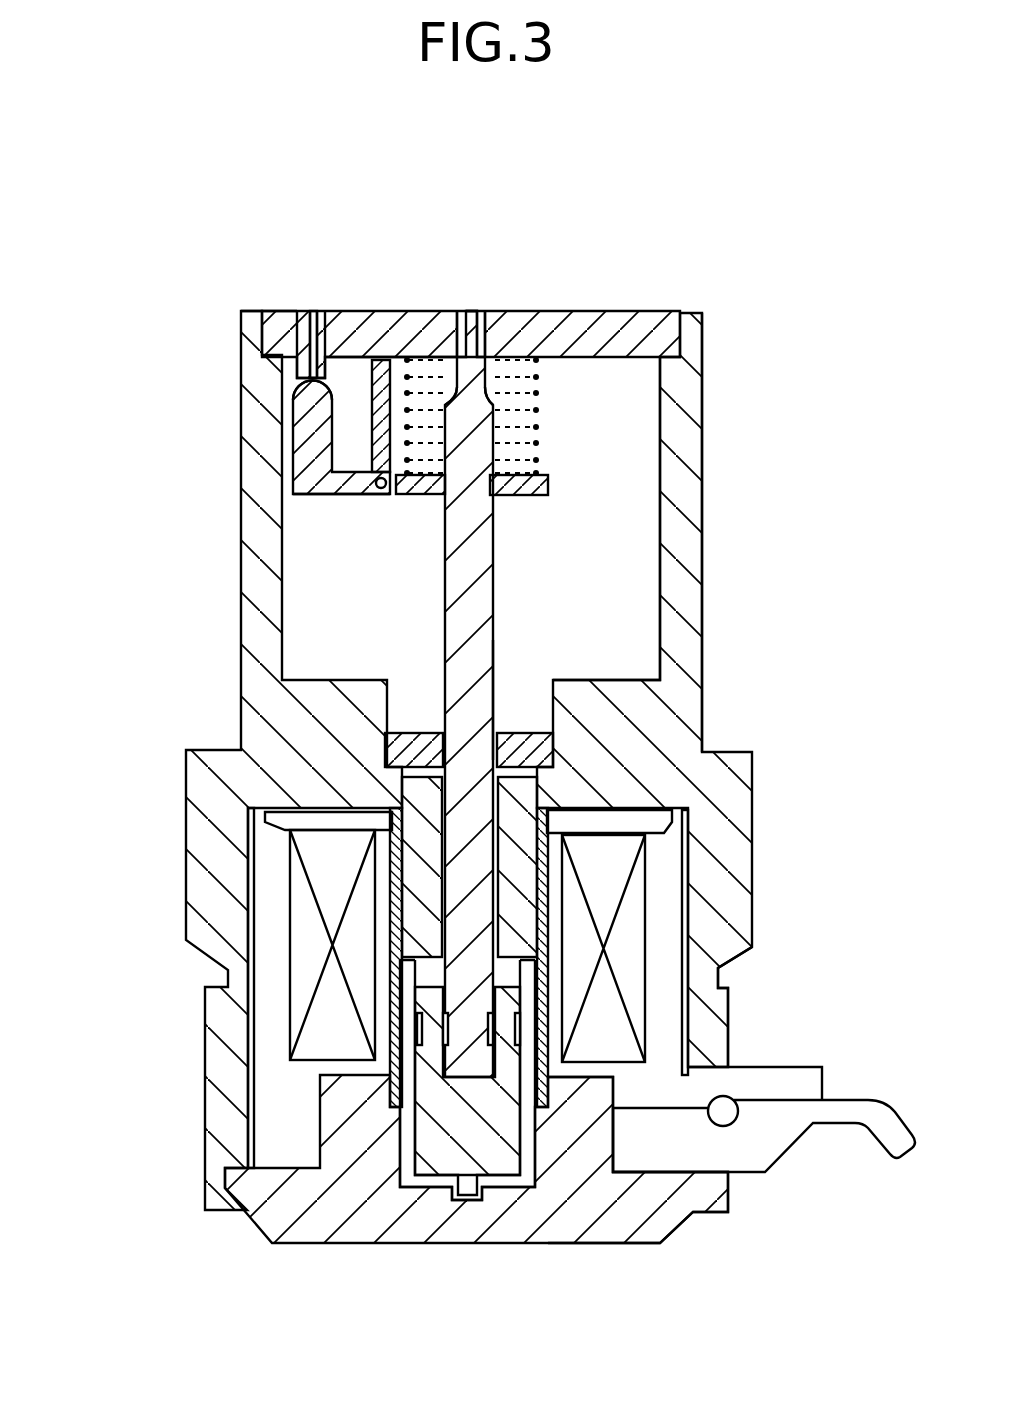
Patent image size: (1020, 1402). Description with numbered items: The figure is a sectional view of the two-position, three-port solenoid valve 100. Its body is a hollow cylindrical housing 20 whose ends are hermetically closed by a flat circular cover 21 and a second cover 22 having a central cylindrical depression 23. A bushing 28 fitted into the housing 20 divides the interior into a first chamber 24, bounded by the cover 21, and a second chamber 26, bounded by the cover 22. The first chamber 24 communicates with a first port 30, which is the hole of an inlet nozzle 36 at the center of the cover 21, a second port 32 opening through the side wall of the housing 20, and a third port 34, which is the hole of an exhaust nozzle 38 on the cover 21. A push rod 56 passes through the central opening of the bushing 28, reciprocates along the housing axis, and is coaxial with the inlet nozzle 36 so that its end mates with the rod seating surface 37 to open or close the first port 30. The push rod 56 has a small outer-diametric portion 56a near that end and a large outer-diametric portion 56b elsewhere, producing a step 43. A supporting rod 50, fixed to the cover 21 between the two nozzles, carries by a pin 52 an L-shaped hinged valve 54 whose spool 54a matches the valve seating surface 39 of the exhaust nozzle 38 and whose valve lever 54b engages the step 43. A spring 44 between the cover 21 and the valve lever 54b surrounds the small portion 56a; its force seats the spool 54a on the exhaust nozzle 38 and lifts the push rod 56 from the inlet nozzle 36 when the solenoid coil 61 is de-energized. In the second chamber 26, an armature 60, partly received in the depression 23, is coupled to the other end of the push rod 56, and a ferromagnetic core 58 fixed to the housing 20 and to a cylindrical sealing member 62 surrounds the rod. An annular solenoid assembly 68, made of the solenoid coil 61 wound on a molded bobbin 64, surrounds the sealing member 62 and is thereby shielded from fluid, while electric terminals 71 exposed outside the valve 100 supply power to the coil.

The 2/3 solenoid valve 100 is at (728, 198).
The housing 20 is at (690, 616).
The cover 21 is at (489, 382).
The cover 22 is at (353, 1197).
The cylindrical depression 23 is at (535, 1157).
The first chamber 24 is at (632, 440).
The second chamber 26 is at (470, 1000).
The bushing 28 is at (400, 748).
The first port 30 is at (469, 322).
The second port 32 is at (690, 562).
The third port 34 is at (314, 330).
The inlet nozzle 36 is at (500, 345).
The rod seating surface 37 is at (432, 345).
The exhaust nozzle 38 is at (298, 335).
The valve seating surface 39 is at (250, 322).
The step 43 is at (530, 487).
The spring 44 is at (540, 385).
The supporting rod 50 is at (383, 395).
The pin 52 is at (378, 488).
The hinged valve 54 is at (298, 458).
The spool 54a is at (302, 398).
The valve lever 54b is at (330, 487).
The push rod 56 is at (490, 640).
The small outer-diametric portion 56a is at (484, 350).
The large outer-diametric portion 56b is at (505, 707).
The core 58 is at (520, 852).
The armature 60 is at (502, 1163).
The solenoid coil 61 is at (310, 1050).
The cylindrical sealing member 62 is at (722, 968).
The bobbin 64 is at (272, 1018).
The solenoid assembly 68 is at (235, 965).
The electric terminals 71 is at (773, 1140).